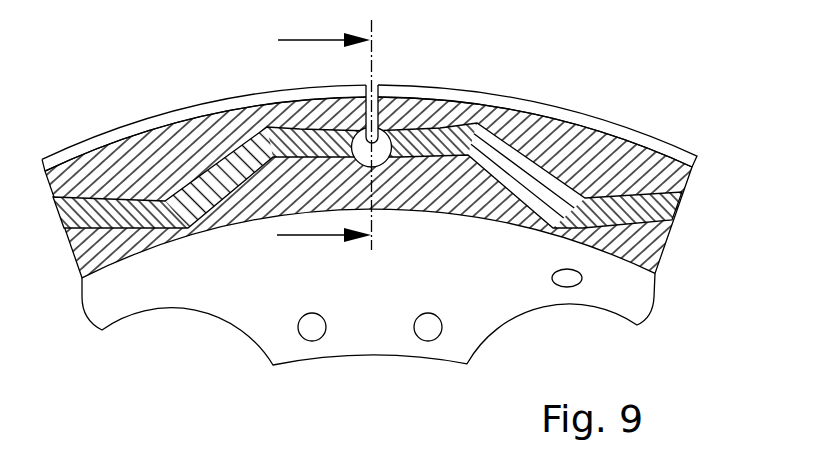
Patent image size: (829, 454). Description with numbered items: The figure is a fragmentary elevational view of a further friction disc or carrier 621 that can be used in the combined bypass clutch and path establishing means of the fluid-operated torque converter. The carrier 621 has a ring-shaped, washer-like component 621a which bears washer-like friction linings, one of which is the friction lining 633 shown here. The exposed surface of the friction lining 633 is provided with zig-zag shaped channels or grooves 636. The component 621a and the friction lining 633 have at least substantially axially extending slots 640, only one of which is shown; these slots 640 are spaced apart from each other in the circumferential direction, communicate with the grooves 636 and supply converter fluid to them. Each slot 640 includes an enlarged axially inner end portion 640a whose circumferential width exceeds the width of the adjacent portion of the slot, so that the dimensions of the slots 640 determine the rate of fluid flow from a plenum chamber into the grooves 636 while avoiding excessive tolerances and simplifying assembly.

The friction disc or carrier 621 is at (400, 185).
The ring-shaped component 621a is at (625, 292).
The friction lining 633 is at (590, 162).
The zig-zag shaped grooves 636 is at (490, 122).
The slots 640 is at (350, 76).
The enlarged axially inner end portions 640a is at (377, 155).